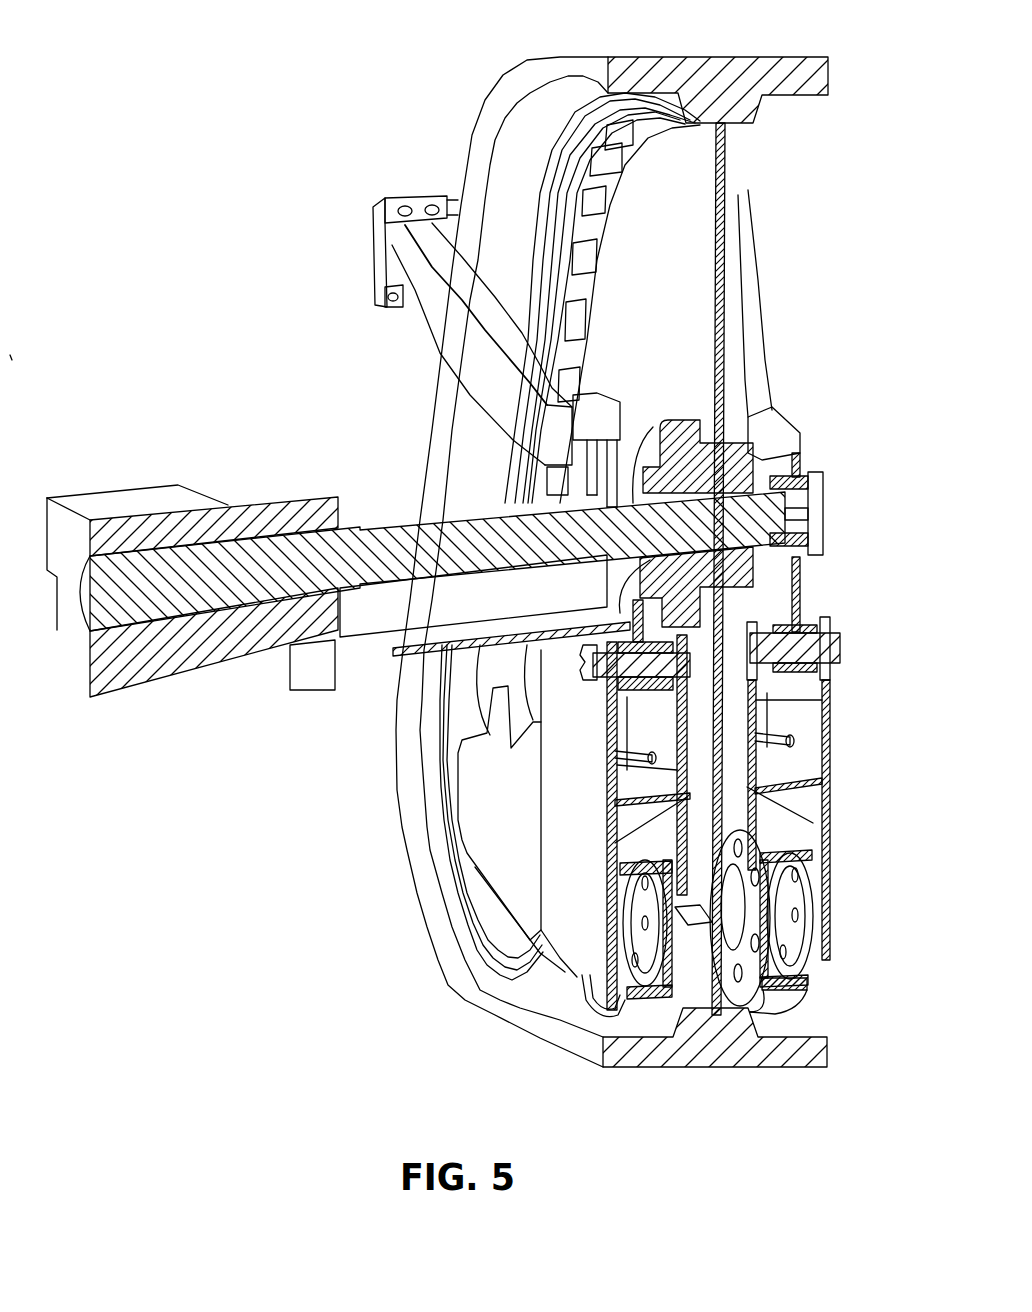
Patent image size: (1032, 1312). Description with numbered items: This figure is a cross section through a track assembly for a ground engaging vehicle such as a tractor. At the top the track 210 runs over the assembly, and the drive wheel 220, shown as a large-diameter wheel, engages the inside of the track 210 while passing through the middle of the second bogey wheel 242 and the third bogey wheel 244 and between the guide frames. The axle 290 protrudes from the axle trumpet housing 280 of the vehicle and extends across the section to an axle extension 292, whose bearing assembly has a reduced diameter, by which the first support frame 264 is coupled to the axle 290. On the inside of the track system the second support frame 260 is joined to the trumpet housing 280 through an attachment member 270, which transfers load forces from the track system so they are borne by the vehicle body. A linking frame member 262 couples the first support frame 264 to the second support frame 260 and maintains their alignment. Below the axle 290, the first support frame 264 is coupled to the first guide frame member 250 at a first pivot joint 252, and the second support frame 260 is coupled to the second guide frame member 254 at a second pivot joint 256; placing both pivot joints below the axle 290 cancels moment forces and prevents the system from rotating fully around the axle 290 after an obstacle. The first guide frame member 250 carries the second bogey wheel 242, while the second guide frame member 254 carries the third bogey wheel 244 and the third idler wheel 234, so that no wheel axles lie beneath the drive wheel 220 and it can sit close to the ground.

The track 210 is at (752, 118).
The drive wheel 220 is at (686, 196).
The linking frame member 262 is at (430, 300).
The axle 290 is at (402, 525).
The axle extension 292 is at (822, 488).
The second support frame 260 is at (612, 593).
The first support frame 264 is at (800, 583).
The first pivot joint 252 is at (832, 650).
The axle trumpet housing 280 is at (193, 648).
The attachment member 270 is at (378, 612).
The second pivot joint 256 is at (600, 675).
The second guide frame member 254 is at (482, 808).
The first guide frame member 250 is at (822, 805).
The third idler wheel 234 is at (500, 928).
The second bogey wheel 242 is at (797, 996).
The third bogey wheel 244 is at (605, 995).